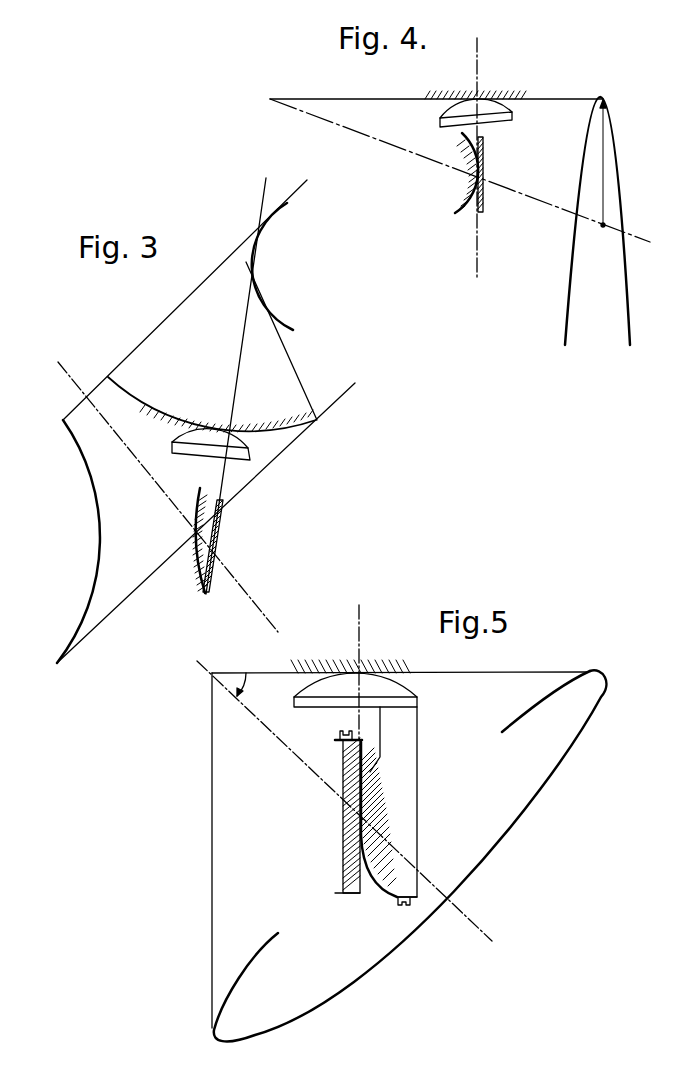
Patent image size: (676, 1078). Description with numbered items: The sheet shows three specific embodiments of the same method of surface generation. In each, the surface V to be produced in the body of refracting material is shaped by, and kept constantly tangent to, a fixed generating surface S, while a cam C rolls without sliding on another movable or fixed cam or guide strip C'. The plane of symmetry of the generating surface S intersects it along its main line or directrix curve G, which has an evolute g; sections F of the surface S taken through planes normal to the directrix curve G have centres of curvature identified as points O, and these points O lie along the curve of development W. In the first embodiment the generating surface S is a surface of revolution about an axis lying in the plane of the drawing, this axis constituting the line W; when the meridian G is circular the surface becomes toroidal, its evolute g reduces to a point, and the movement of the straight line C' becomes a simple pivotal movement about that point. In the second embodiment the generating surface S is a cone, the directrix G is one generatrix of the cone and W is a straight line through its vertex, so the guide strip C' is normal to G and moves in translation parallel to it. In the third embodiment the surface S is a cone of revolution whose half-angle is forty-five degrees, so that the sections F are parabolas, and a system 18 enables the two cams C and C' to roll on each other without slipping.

In FIG. 3, the curve of development W is at (68, 377).
In FIG. 4, the curve of development W is at (370, 142).
In FIG. 5, the curve of development W is at (492, 935).
In FIG. 3, the evolute g is at (275, 310).
In FIG. 3, the directrix curve G is at (212, 404).
In FIG. 4, the directrix curve G is at (465, 91).
In FIG. 3, the surface V is at (230, 443).
In FIG. 4, the surface V is at (490, 107).
In FIG. 5, the surface V is at (388, 690).
In FIG. 3, the generating surface S is at (92, 500).
In FIG. 4, the generating surface S is at (525, 286).
In FIG. 5, the generating surface S is at (570, 698).
In FIG. 3, the cam C is at (177, 540).
In FIG. 4, the cam C is at (446, 173).
In FIG. 5, the cam C is at (412, 819).
In FIG. 3, the cam C' is at (244, 546).
In FIG. 4, the cam C' is at (504, 185).
In FIG. 5, the cam C' is at (327, 812).
In FIG. 4, the centre of curvature O is at (603, 173).
In FIG. 4, the section F is at (597, 230).
In FIG. 5, the system 18 is at (389, 908).